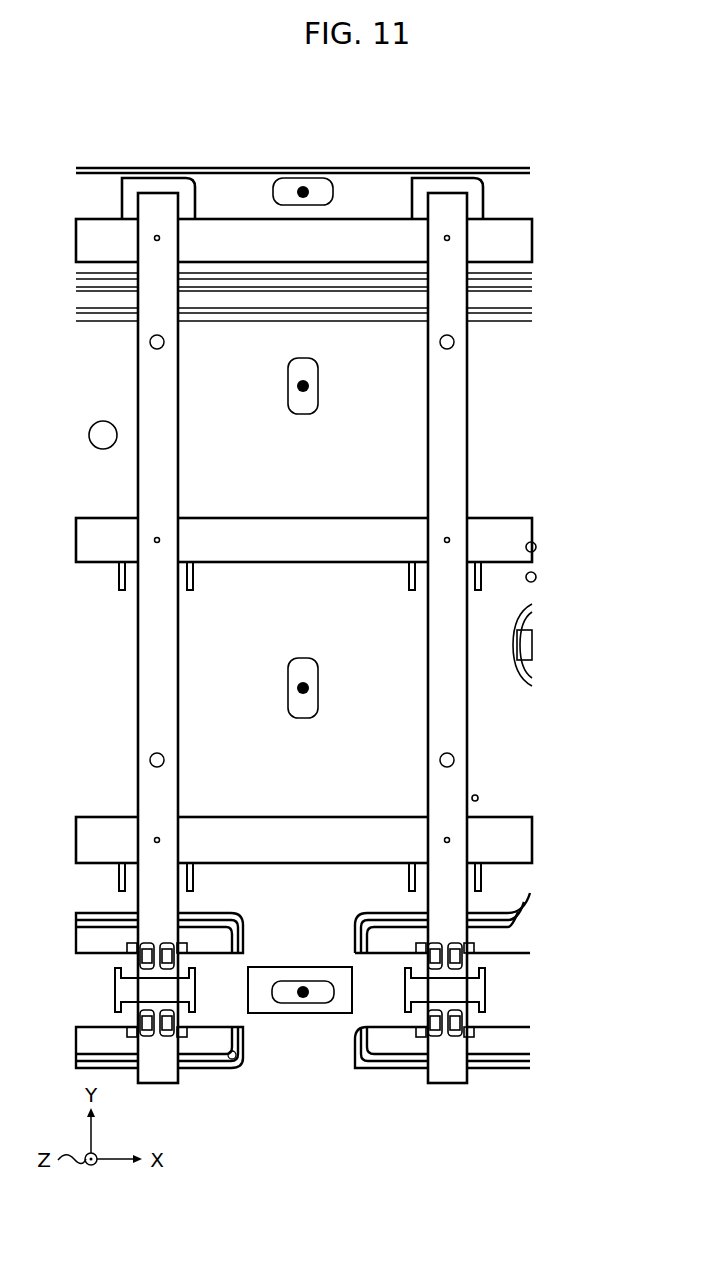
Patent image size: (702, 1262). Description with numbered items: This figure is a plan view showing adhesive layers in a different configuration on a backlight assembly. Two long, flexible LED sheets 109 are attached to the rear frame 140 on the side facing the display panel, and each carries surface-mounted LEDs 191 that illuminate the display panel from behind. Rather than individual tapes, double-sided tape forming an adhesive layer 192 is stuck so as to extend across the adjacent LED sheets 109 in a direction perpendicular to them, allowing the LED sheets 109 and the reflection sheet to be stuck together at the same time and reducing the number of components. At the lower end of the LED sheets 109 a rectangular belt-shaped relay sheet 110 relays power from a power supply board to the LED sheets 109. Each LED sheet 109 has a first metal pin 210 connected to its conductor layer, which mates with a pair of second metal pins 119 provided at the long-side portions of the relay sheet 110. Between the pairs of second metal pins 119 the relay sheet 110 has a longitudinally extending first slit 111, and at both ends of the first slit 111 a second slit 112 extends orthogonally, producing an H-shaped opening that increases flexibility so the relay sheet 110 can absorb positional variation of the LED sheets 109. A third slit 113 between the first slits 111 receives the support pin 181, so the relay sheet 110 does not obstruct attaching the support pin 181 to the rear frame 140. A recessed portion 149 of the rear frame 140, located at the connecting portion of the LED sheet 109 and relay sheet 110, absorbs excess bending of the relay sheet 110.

The LED sheet 109 is at (452, 636).
The relay sheet 110 is at (283, 1029).
The first slit 111 is at (462, 1025).
The second slit 112 is at (405, 982).
The third slit 113 is at (260, 978).
The second metal pin 119 is at (430, 1030).
The rear frame 140 is at (352, 166).
The recessed portion 149 is at (96, 945).
The support pin 181 is at (300, 978).
The LED 191 is at (445, 540).
The adhesive layer 192 is at (340, 253).
The first metal pin 210 is at (438, 950).